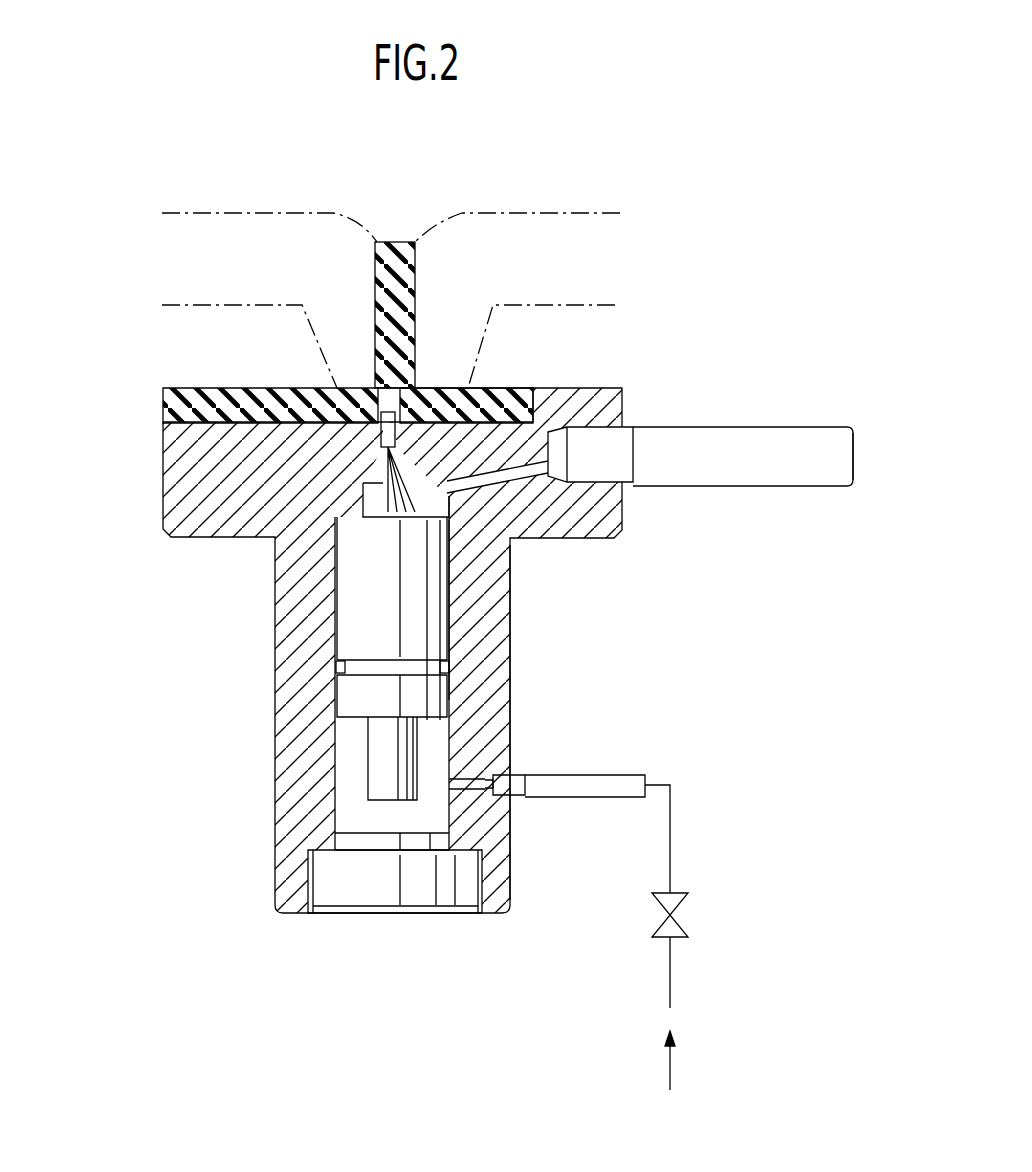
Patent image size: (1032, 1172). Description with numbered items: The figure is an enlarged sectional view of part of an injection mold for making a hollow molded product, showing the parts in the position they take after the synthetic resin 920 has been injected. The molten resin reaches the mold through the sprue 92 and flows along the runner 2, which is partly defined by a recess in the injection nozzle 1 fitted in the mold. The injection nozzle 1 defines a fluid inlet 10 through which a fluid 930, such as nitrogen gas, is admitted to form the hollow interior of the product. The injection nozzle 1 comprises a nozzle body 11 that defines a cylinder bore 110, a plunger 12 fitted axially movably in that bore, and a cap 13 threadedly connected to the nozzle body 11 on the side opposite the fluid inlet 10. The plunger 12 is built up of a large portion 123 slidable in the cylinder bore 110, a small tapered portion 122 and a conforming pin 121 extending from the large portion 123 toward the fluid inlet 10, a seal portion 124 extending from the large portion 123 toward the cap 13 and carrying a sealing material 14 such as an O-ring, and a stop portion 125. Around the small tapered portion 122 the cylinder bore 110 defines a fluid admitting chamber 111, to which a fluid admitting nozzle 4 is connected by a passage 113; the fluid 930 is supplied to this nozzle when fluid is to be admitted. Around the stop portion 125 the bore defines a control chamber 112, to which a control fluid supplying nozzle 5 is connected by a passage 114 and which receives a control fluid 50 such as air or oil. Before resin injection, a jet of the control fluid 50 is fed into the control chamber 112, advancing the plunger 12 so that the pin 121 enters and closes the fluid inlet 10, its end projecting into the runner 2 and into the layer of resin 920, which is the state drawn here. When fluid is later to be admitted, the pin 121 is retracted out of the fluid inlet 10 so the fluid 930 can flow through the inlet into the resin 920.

The injection nozzle 1 is at (606, 380).
The runner 2 is at (245, 388).
The fluid admitting nozzle 4 is at (693, 440).
The control fluid supplying nozzle 5 is at (612, 782).
The fluid inlet 10 is at (443, 388).
The nozzle body 11 is at (492, 650).
The plunger 12 is at (451, 590).
The cap 13 is at (380, 883).
The sealing material 14 is at (337, 667).
The control fluid 50 is at (669, 1081).
The sprue 92 is at (413, 287).
The synthetic resin 920 is at (350, 388).
The fluid 930 is at (880, 451).
The cylinder bore 110 is at (347, 567).
The fluid admitting chamber 111 is at (452, 503).
The control chamber 112 is at (432, 820).
The passage 113 is at (518, 458).
The passage 114 is at (468, 770).
The pin 121 is at (383, 440).
The small tapered portion 122 is at (372, 500).
The large portion 123 is at (355, 615).
The seal portion 124 is at (363, 677).
The stop portion 125 is at (383, 780).